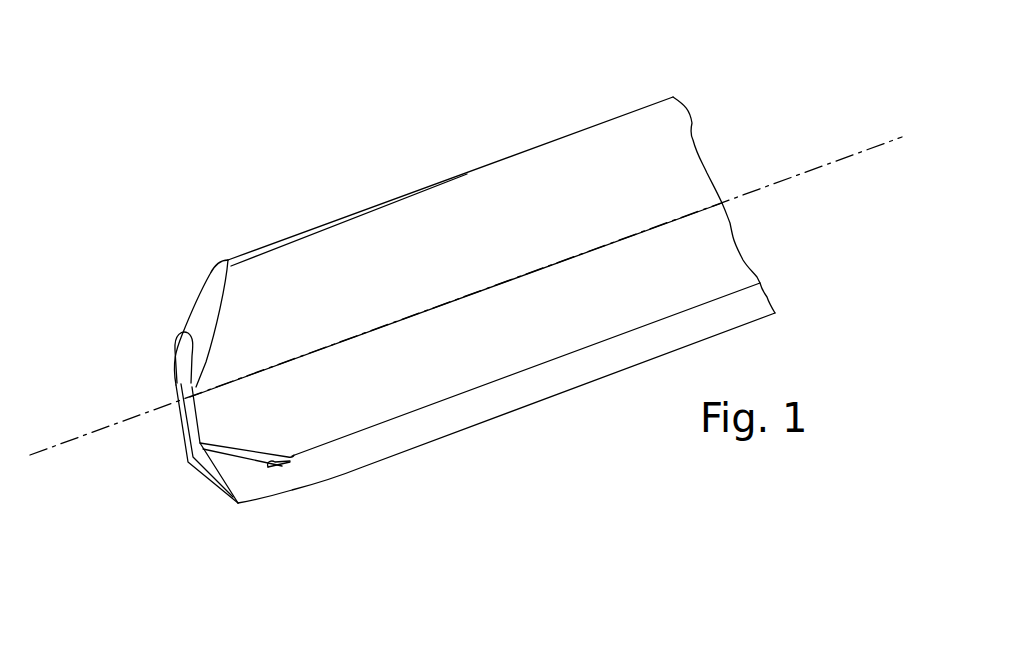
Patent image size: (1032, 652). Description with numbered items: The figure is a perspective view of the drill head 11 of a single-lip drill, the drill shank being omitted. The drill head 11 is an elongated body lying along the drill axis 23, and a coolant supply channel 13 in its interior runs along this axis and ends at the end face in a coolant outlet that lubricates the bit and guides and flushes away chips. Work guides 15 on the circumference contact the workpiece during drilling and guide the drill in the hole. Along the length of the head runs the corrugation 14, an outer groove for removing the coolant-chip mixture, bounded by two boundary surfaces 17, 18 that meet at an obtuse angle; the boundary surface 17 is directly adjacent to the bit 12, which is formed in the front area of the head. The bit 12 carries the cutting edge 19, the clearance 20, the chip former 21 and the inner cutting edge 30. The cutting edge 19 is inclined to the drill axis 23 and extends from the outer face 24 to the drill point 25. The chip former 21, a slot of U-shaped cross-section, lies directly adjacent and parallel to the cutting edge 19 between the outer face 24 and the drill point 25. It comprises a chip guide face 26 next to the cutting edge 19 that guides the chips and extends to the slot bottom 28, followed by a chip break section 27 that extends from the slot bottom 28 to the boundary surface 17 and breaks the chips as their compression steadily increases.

The drill head 11 is at (713, 77).
The bit 12 is at (211, 502).
The coolant supply channel 13 is at (178, 362).
The corrugation 14 is at (596, 230).
The work guides 15 is at (185, 277).
The boundary surface 17 is at (394, 371).
The boundary surface 18 is at (384, 262).
The cutting edge 19 is at (266, 467).
The clearance 20 is at (184, 482).
The chip former 21 is at (265, 420).
The drill axis 23 is at (862, 148).
The outer face 24 is at (515, 403).
The drill point 25 is at (186, 455).
The chip guide face 26 is at (279, 464).
The chip break section 27 is at (293, 457).
The slot bottom 28 is at (296, 461).
The inner cutting edge 30 is at (178, 393).